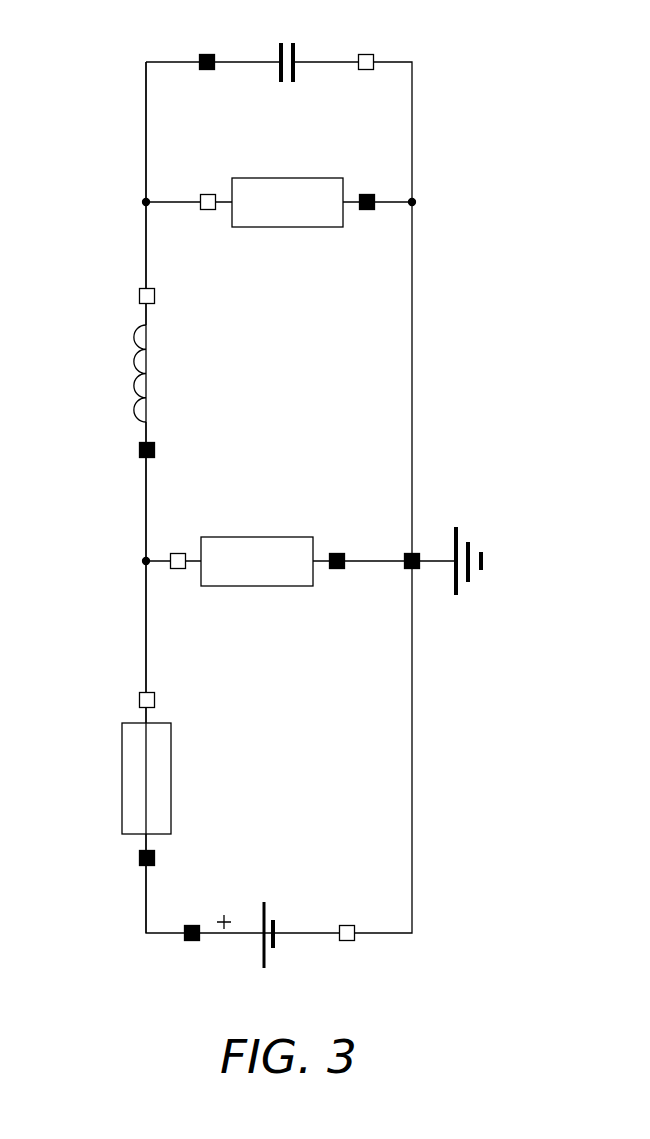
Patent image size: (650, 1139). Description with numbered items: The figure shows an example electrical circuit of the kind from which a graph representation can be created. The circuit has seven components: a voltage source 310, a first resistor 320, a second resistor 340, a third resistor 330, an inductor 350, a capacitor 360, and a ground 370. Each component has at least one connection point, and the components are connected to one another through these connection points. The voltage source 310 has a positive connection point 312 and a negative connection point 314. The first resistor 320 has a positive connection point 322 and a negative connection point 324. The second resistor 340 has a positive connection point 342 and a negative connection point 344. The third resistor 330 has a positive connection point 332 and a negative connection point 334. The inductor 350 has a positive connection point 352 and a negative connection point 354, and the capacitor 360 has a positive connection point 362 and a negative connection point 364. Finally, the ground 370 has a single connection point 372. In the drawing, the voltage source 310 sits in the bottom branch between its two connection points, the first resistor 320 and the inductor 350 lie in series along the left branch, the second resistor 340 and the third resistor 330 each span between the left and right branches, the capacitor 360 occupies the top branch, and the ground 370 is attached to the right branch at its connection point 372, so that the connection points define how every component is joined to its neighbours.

The voltage source 310 is at (263, 921).
The connection point constantVoltage.p 312 is at (191, 943).
The connection point constantVoltage.n 314 is at (347, 925).
The first resistor R1 320 is at (122, 808).
The connection point R1.p 322 is at (139, 858).
The connection point R1.n 324 is at (139, 700).
The third resistor R3 330 is at (225, 587).
The connection point R3.p 332 is at (337, 553).
The connection point R3.n 334 is at (178, 553).
The second resistor R2 340 is at (320, 228).
The connection point R2.p 342 is at (366, 194).
The connection point R2.n 344 is at (208, 194).
The inductor L 350 is at (134, 338).
The connection point L.p 352 is at (139, 452).
The connection point L.n 354 is at (139, 293).
The capacitor C 360 is at (295, 52).
The connection point C.p 362 is at (201, 56).
The connection point C.n 364 is at (369, 56).
The ground 370 is at (455, 543).
The connection point ground.p 372 is at (404, 566).